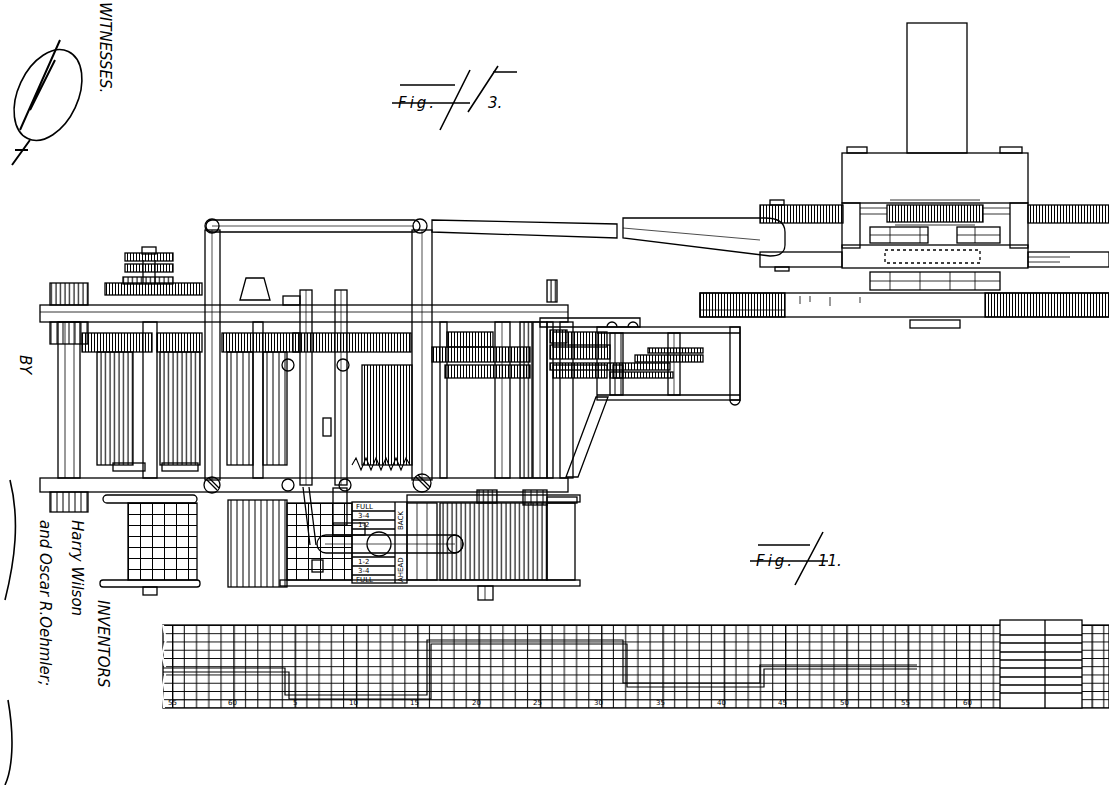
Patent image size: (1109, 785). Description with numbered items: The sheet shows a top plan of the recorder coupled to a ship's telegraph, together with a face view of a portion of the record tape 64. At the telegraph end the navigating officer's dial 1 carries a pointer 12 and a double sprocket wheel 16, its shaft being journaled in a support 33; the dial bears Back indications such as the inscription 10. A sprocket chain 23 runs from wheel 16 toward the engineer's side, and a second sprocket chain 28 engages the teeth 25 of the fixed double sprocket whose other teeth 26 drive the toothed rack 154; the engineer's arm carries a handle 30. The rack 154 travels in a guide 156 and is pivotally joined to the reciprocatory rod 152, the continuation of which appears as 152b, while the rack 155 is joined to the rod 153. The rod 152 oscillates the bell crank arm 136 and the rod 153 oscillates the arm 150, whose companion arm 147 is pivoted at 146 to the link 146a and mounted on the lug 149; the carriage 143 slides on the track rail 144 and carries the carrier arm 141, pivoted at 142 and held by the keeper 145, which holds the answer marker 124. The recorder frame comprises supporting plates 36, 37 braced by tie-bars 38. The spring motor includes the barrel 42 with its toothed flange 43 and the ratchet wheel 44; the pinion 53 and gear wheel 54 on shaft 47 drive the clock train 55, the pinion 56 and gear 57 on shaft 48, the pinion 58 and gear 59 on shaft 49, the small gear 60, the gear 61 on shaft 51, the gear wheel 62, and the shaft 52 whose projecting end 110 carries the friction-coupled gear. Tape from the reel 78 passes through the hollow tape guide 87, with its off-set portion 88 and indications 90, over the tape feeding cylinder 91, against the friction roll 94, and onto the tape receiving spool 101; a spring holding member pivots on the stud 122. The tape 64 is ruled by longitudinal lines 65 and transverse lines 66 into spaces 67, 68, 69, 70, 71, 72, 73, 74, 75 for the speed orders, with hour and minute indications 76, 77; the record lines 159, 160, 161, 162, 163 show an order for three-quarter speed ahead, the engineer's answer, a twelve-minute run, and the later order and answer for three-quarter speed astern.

In FIG. 3, the navigating officer's dial 1 is at (880, 310).
In FIG. 3, the Back order indication 10 is at (980, 262).
In FIG. 3, the pointer 12 is at (938, 328).
In FIG. 3, the double sprocket wheel 16 is at (965, 283).
In FIG. 3, the sprocket chain 23 is at (1005, 283).
In FIG. 3, the sprocket teeth 25 is at (1000, 237).
In FIG. 3, the sprocket teeth 26 is at (938, 220).
In FIG. 3, the sprocket chain 28 is at (870, 237).
In FIG. 3, the handle 30 is at (62, 428).
In FIG. 3, the support 33 is at (955, 86).
In FIG. 3, the supporting plate 36 is at (97, 484).
In FIG. 3, the supporting plate 37 is at (55, 312).
In FIG. 3, the tie-bars 38 is at (556, 456).
In FIG. 3, the barrel 42 is at (122, 411).
In FIG. 3, the annular flange 43 is at (107, 355).
In FIG. 3, the ratchet wheel 44 is at (82, 347).
In FIG. 3, the driven shaft 47 is at (531, 429).
In FIG. 3, the driven shaft 48 is at (500, 450).
In FIG. 3, the driven shaft 49 is at (437, 442).
In FIG. 3, the driven shaft 51 is at (262, 402).
In FIG. 3, the driven shaft 52 is at (145, 437).
In FIG. 3, the pinion 53 is at (570, 328).
In FIG. 3, the gear wheel 54 is at (590, 343).
In FIG. 3, the clock train 55 is at (735, 370).
In FIG. 3, the pinion 56 is at (477, 415).
In FIG. 3, the gear 57 is at (490, 362).
In FIG. 3, the pinion 58 is at (480, 350).
In FIG. 3, the gear 59 is at (455, 333).
In FIG. 3, the small gear 60 is at (318, 345).
In FIG. 3, the gear 61 is at (243, 352).
In FIG. 3, the gear wheel 62 is at (290, 296).
In FIG. 11, the record tape 64 is at (732, 612).
In FIG. 3, the longitudinally extending lines 65 is at (190, 285).
In FIG. 11, the longitudinally extending lines 65 is at (688, 703).
In FIG. 11, the transversely extending lines 66 is at (675, 632).
In FIG. 11, the record space 67 is at (898, 633).
In FIG. 11, the record space 68 is at (908, 642).
In FIG. 11, the record space 69 is at (918, 650).
In FIG. 11, the record space 70 is at (925, 660).
In FIG. 11, the record space 71 is at (925, 668).
In FIG. 11, the record space 72 is at (930, 675).
In FIG. 11, the record space 73 is at (925, 685).
In FIG. 11, the record space 74 is at (920, 690).
In FIG. 11, the record space 75 is at (905, 703).
In FIG. 11, the hour indications 76 is at (235, 636).
In FIG. 11, the minute indications 77 is at (358, 708).
In FIG. 3, the reel 78 is at (550, 541).
In FIG. 3, the tape guide 87 is at (356, 587).
In FIG. 11, the tape guide 87 is at (1016, 708).
In FIG. 3, the off-set portion 88 is at (320, 392).
In FIG. 11, the indications 90 is at (1040, 625).
In FIG. 3, the tape feeding cylinder 91 is at (315, 555).
In FIG. 3, the friction roll 94 is at (244, 551).
In FIG. 3, the tape receiving spool 101 is at (140, 588).
In FIG. 3, the projecting end of shaft 110 is at (145, 253).
In FIG. 3, the stud 122 is at (278, 542).
In FIG. 3, the answer marker 124 is at (440, 555).
In FIG. 3, the bell crank arm 136 is at (220, 258).
In FIG. 3, the carrier arm 141 is at (370, 340).
In FIG. 3, the pivot 142 is at (323, 345).
In FIG. 3, the reciprocatory carriage 143 is at (331, 420).
In FIG. 3, the track rail 144 is at (340, 340).
In FIG. 3, the keeper 145 is at (440, 495).
In FIG. 3, the pivot 146 is at (420, 466).
In FIG. 3, the link 146a is at (365, 345).
In FIG. 3, the bell crank arm 147 is at (390, 553).
In FIG. 3, the lug 149 is at (395, 497).
In FIG. 3, the bell crank arm 150 is at (425, 272).
In FIG. 3, the reciprocatory rod 152 is at (263, 220).
In FIG. 3, the lever bar 152b is at (690, 230).
In FIG. 3, the reciprocatory rod 153 is at (563, 232).
In FIG. 3, the toothed rack 154 is at (800, 208).
In FIG. 3, the toothed rack 155 is at (823, 252).
In FIG. 11, the guide 156 is at (170, 670).
In FIG. 11, the record line 159 is at (286, 700).
In FIG. 11, the record line 160 is at (305, 705).
In FIG. 11, the record line 161 is at (400, 705).
In FIG. 11, the record line 162 is at (423, 640).
In FIG. 11, the record line 163 is at (437, 640).